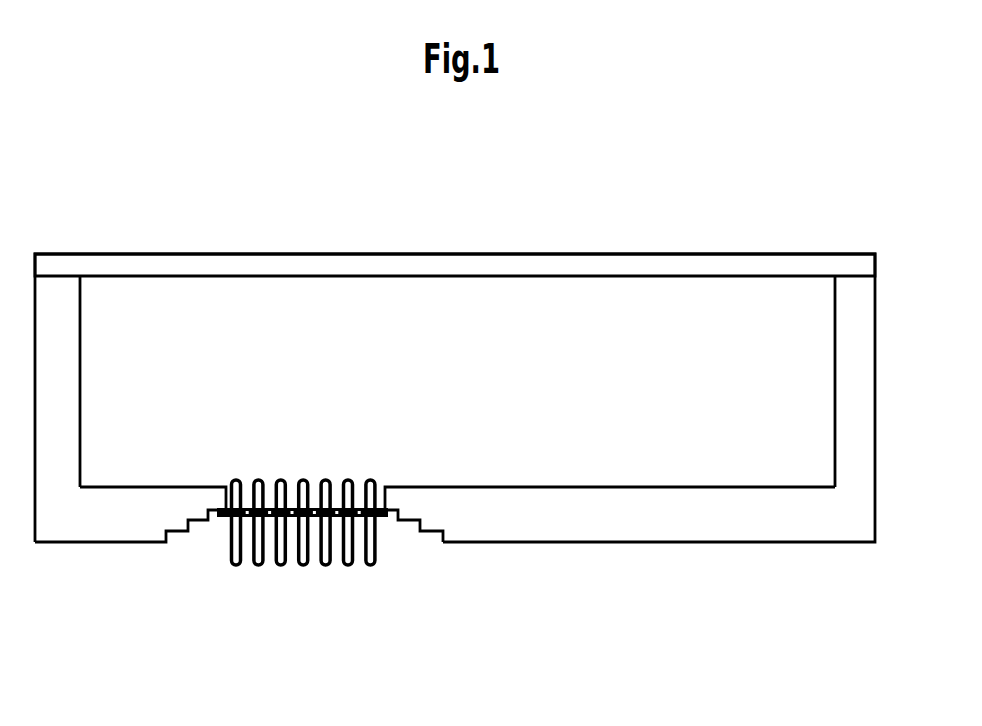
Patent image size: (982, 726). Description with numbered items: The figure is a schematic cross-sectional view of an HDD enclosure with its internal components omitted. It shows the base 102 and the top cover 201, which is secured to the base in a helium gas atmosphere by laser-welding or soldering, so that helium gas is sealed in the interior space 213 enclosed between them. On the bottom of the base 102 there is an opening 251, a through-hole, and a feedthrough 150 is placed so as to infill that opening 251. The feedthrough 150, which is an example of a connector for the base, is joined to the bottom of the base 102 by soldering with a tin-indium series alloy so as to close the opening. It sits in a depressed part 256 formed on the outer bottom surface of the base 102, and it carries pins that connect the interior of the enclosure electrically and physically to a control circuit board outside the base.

The base 102 is at (455, 454).
The top cover 201 is at (325, 253).
The interior space 213 is at (531, 474).
The opening 251 is at (281, 538).
The depressed part 256 is at (393, 538).
The feedthrough 150 is at (231, 552).